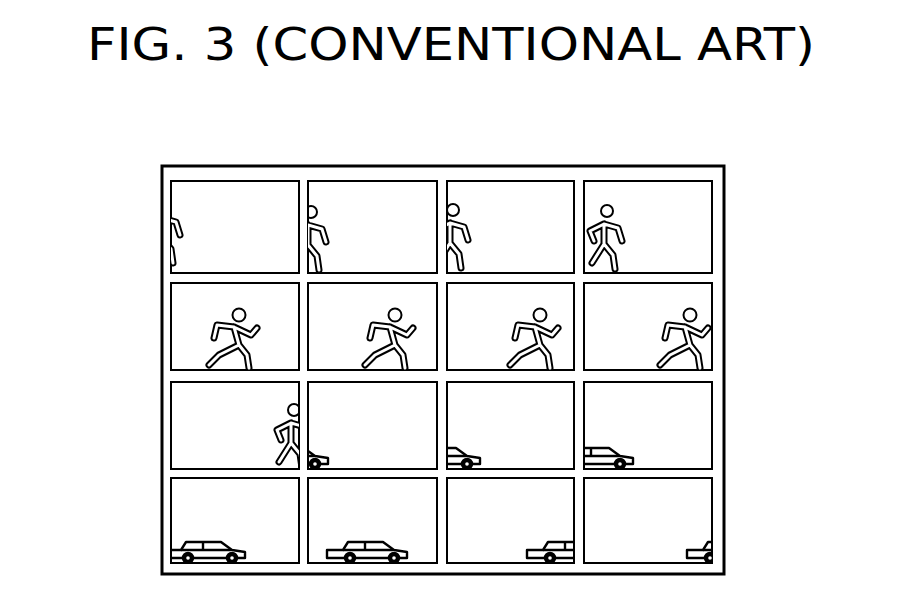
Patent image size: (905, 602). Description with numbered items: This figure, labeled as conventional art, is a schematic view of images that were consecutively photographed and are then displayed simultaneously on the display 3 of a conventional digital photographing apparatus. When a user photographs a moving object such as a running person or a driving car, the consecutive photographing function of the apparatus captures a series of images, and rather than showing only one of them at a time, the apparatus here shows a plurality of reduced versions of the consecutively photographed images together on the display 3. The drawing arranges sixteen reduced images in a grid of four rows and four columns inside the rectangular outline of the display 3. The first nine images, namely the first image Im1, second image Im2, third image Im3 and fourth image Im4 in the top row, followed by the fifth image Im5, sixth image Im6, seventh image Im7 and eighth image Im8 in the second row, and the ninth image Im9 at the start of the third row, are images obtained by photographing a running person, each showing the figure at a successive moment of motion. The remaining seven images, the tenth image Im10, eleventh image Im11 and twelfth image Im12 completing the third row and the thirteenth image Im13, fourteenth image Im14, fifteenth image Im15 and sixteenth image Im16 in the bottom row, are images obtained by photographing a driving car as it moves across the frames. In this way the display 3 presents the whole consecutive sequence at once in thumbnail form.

The display 3 is at (694, 145).
The first image Im1 is at (258, 181).
The second image Im2 is at (383, 181).
The third image Im3 is at (519, 181).
The fourth image Im4 is at (658, 181).
The fifth image Im5 is at (171, 338).
The sixth image Im6 is at (308, 301).
The seventh image Im7 is at (575, 302).
The eighth image Im8 is at (712, 338).
The ninth image Im9 is at (171, 436).
The tenth image Im10 is at (308, 401).
The eleventh image Im11 is at (575, 400).
The twelfth image Im12 is at (712, 435).
The thirteenth image Im13 is at (171, 531).
The fourteenth image Im14 is at (308, 498).
The fifteenth image Im15 is at (575, 497).
The sixteenth image Im16 is at (712, 531).